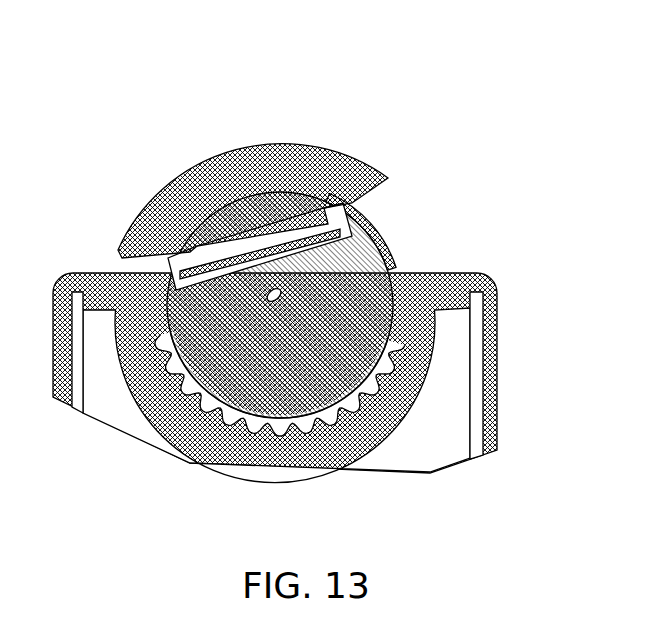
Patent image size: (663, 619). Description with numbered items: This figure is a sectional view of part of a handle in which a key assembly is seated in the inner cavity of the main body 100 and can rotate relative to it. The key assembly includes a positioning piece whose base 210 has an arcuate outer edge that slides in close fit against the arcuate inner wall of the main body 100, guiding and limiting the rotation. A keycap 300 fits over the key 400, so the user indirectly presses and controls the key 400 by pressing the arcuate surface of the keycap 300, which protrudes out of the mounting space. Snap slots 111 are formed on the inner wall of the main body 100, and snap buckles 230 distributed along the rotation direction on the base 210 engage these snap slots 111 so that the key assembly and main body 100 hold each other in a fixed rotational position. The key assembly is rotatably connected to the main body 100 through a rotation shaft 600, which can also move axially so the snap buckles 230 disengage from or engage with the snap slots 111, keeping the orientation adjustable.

The main body 100 is at (319, 378).
The snap slot 111 is at (278, 429).
The base 210 is at (357, 303).
The snap buckle 230 is at (278, 420).
The keycap 300 is at (253, 162).
The key 400 is at (196, 190).
The rotation shaft 600 is at (406, 201).